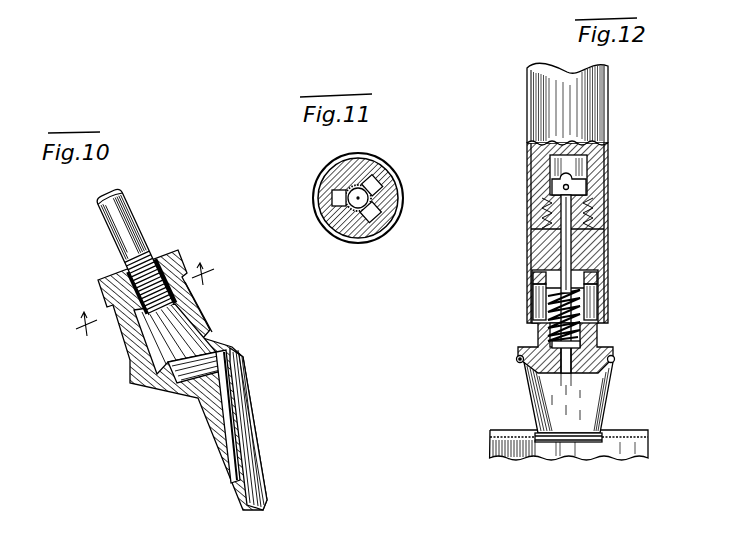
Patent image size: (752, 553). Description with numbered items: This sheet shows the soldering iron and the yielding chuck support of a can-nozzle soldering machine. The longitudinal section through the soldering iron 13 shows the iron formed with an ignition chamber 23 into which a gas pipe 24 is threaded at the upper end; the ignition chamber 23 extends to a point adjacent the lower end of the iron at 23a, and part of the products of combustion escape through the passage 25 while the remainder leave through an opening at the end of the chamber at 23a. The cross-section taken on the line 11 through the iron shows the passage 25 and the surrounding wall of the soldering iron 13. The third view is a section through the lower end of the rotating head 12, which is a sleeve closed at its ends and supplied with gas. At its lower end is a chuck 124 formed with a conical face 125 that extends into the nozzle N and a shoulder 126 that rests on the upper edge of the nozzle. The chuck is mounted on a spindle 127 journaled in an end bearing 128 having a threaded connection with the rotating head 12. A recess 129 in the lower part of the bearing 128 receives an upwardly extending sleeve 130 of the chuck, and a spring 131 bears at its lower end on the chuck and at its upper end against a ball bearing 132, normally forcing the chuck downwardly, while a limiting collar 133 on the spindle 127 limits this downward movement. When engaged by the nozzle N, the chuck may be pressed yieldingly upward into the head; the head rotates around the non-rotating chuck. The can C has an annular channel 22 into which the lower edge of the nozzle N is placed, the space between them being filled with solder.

In FIG. 10, the section line 11 is at (142, 301).
In FIG. 12, the rotating head 12 is at (600, 86).
In FIG. 10, the soldering iron 13 is at (203, 338).
In FIG. 11, the soldering iron 13 is at (336, 177).
In FIG. 12, the annular channel 22 is at (600, 442).
In FIG. 10, the ignition chamber 23 is at (140, 352).
In FIG. 10, the lower end of ignition chamber 23a is at (222, 433).
In FIG. 10, the gas pipe 24 is at (132, 238).
In FIG. 10, the passage 25 is at (120, 274).
In FIG. 11, the passage 25 is at (366, 214).
In FIG. 12, the chuck 124 is at (600, 345).
In FIG. 12, the conical face 125 is at (521, 362).
In FIG. 12, the shoulder 126 is at (614, 356).
In FIG. 12, the spindle 127 is at (567, 255).
In FIG. 12, the end bearing 128 is at (602, 215).
In FIG. 12, the recess 129 is at (589, 296).
In FIG. 12, the sleeve 130 is at (592, 320).
In FIG. 12, the spring 131 is at (534, 300).
In FIG. 12, the ball bearing 132 is at (535, 273).
In FIG. 12, the limiting collar 133 is at (600, 178).
In FIG. 12, the nozzle N is at (584, 397).
In FIG. 12, the can C is at (636, 432).